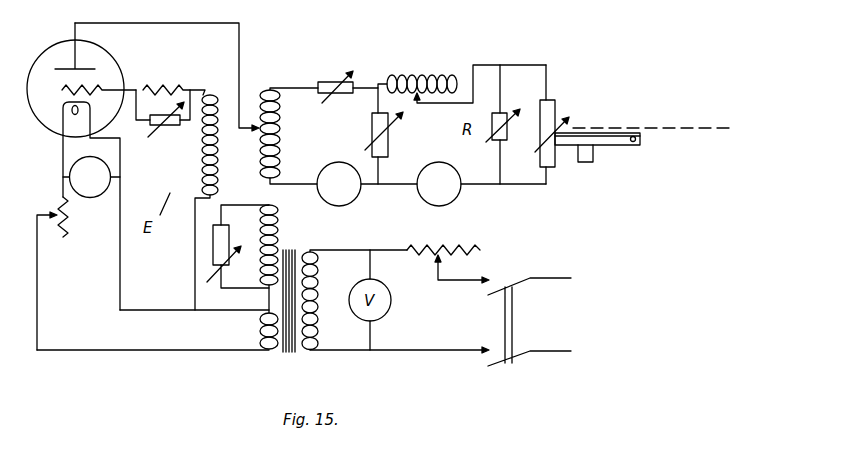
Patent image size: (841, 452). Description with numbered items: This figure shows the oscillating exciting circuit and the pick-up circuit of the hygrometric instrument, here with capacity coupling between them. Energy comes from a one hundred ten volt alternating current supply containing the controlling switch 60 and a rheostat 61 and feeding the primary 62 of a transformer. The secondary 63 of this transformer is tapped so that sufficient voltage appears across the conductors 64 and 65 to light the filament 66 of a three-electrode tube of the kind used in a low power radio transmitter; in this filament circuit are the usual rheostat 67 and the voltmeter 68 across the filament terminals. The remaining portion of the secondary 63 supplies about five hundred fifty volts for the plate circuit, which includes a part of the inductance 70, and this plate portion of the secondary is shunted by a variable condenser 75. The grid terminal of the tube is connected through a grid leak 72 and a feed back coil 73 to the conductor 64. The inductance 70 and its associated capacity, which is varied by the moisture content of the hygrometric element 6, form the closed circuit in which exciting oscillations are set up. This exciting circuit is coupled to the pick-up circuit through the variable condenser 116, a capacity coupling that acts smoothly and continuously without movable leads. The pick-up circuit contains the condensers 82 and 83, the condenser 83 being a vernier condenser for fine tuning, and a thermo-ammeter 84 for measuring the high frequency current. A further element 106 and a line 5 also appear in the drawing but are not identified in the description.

The filament 66 is at (72, 112).
The grid leak 72 is at (180, 83).
The feed back coil 73 is at (203, 156).
The inductance 70 is at (275, 87).
The variable resistor 106 is at (337, 80).
The variable condenser 116 is at (393, 139).
The thermo-ammeter 84 is at (337, 160).
The vernier condenser 83 is at (497, 112).
The condenser 82 is at (551, 103).
The hygrometric element 6 is at (615, 146).
The axis line 5 is at (677, 128).
The voltmeter 68 is at (97, 200).
The rheostat 67 is at (63, 240).
The conductor 64 is at (175, 298).
The conductor 65 is at (175, 350).
The variable condenser 75 is at (234, 252).
The secondary 63 is at (278, 240).
The primary 62 is at (318, 328).
The rheostat 61 is at (480, 250).
The controlling switch 60 is at (512, 320).